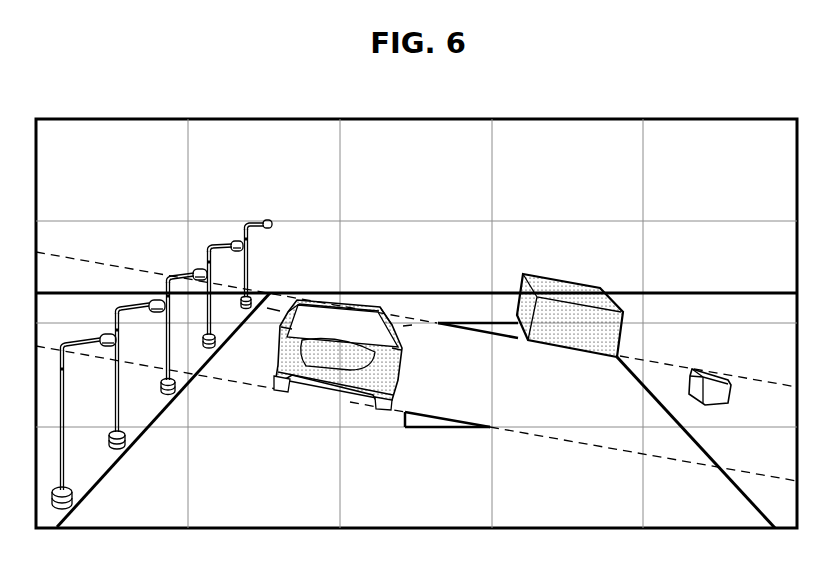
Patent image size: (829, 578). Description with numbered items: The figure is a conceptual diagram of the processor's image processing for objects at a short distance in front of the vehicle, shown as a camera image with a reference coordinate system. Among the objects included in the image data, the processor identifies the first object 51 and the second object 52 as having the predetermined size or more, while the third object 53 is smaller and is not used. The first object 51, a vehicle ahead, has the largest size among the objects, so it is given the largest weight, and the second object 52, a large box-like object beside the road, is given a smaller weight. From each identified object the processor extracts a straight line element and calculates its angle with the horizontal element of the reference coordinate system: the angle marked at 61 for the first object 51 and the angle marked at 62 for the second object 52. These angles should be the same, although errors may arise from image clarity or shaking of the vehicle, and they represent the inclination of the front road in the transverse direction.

The first object 51 is at (365, 305).
The second object 52 is at (548, 288).
The third object 53 is at (718, 378).
The first angle θ1 of lane line 61 is at (378, 443).
The second angle θ2 relative to horizon 62 is at (474, 293).